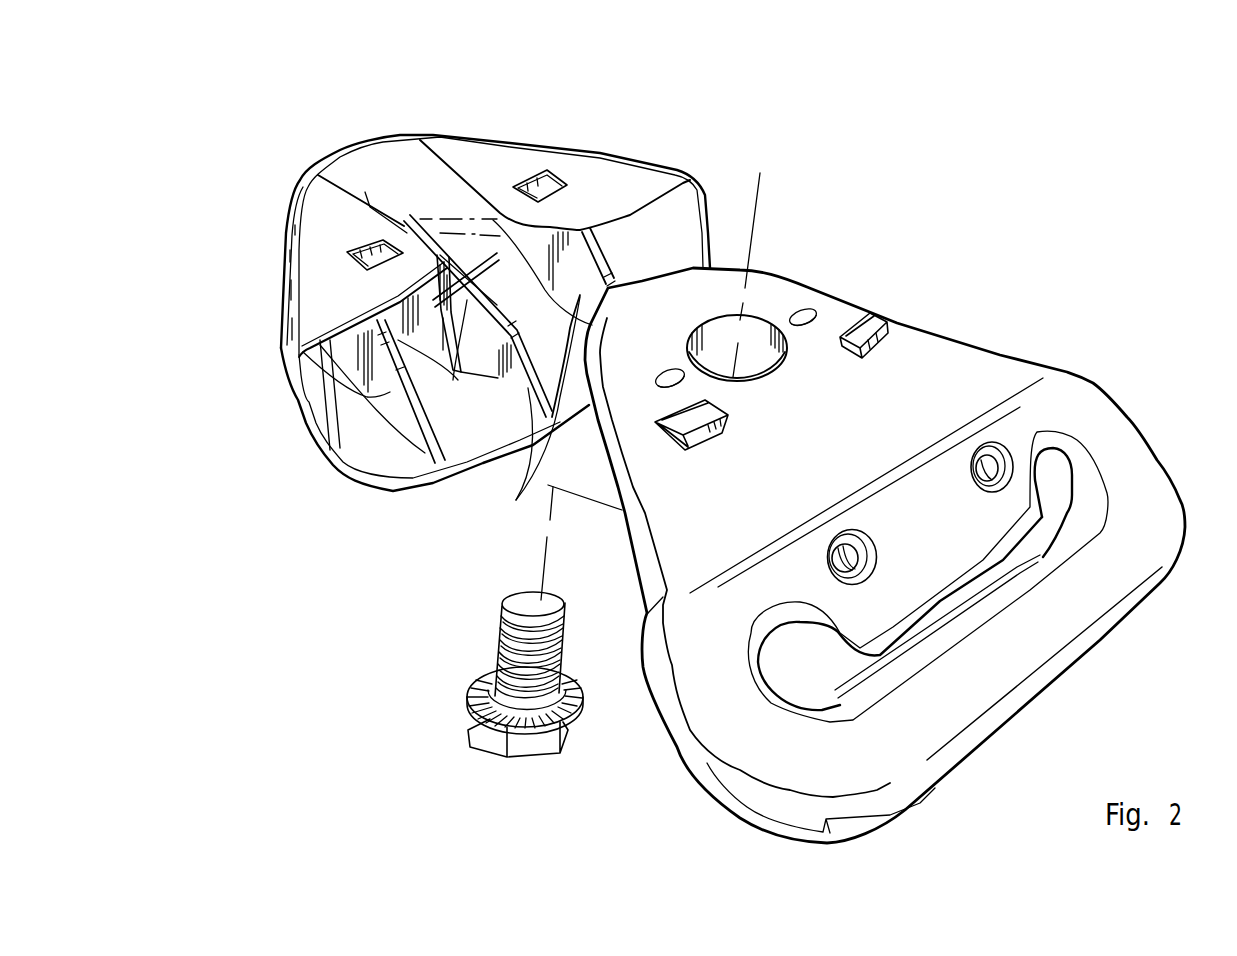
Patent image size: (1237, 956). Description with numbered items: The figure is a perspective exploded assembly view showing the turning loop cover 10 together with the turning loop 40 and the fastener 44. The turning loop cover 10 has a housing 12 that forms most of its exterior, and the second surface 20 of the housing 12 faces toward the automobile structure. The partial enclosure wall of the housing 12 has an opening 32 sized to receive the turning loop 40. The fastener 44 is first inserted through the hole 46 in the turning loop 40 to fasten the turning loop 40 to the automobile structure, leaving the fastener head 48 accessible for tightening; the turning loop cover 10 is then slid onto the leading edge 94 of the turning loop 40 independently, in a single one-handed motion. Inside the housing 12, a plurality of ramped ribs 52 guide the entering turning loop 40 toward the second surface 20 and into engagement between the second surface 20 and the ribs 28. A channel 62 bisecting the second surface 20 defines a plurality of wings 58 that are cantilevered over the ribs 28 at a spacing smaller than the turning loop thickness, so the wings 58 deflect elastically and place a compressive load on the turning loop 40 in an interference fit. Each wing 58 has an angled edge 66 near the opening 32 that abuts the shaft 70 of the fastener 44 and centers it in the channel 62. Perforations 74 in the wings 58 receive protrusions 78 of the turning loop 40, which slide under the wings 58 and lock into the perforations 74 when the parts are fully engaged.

The turning loop cover 10 is at (521, 113).
The housing 12 is at (289, 197).
The second surface 20 is at (454, 143).
The ribs 28 is at (412, 213).
The opening 32 is at (463, 437).
The turning loop 40 is at (1014, 305).
The fastener 44 is at (430, 739).
The hole 46 is at (773, 320).
The fastener head 48 is at (490, 745).
The ramped ribs 52 is at (516, 500).
The wings 58 is at (373, 287).
The channel 62 is at (357, 160).
The angled edge 66 is at (380, 390).
The shaft 70 is at (500, 622).
The perforations 74 is at (357, 245).
The protrusions 78 is at (728, 418).
The leading edge 94 is at (720, 277).